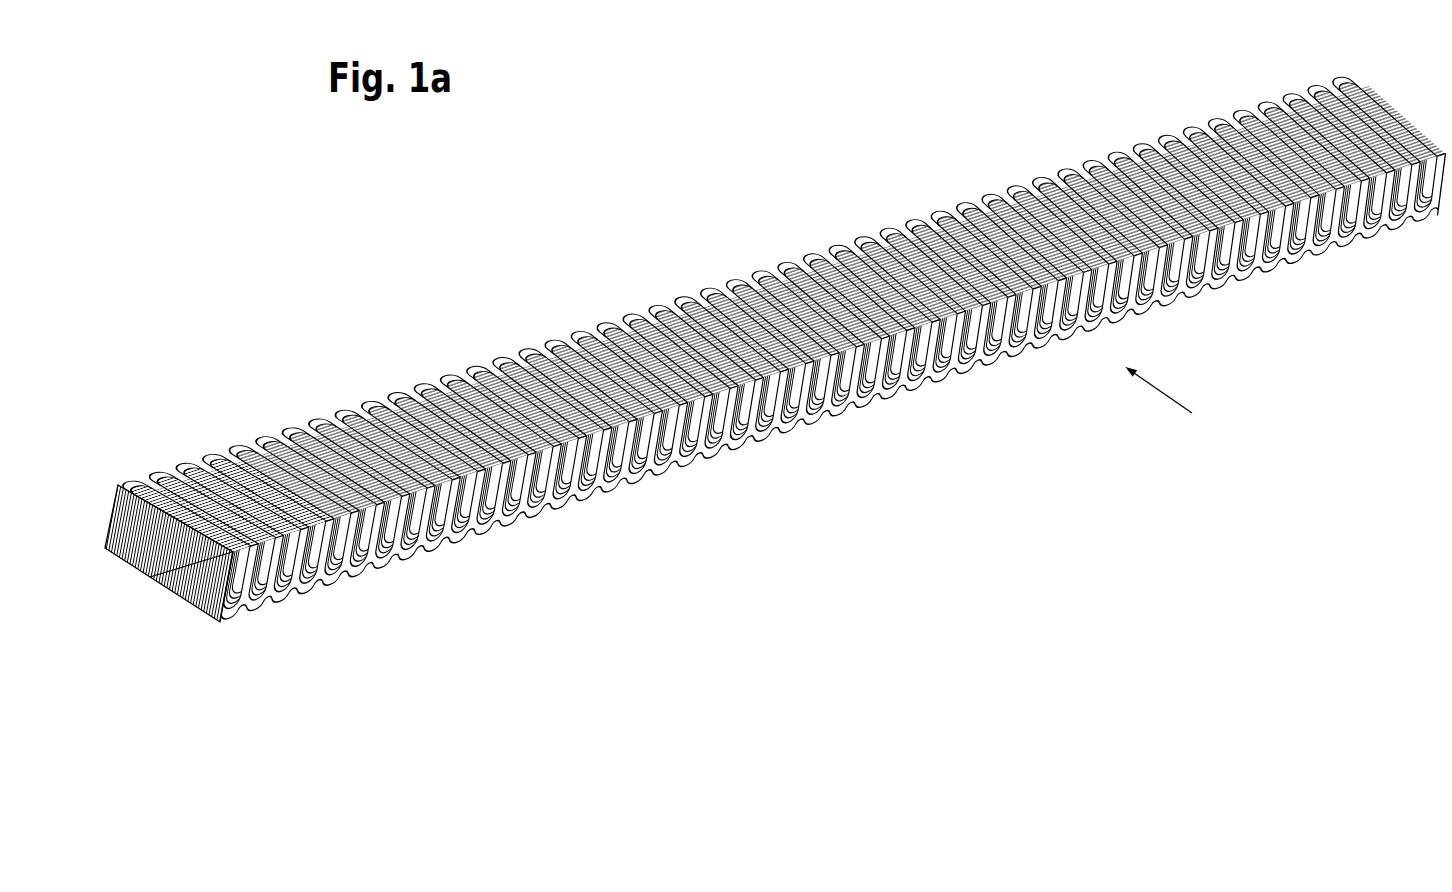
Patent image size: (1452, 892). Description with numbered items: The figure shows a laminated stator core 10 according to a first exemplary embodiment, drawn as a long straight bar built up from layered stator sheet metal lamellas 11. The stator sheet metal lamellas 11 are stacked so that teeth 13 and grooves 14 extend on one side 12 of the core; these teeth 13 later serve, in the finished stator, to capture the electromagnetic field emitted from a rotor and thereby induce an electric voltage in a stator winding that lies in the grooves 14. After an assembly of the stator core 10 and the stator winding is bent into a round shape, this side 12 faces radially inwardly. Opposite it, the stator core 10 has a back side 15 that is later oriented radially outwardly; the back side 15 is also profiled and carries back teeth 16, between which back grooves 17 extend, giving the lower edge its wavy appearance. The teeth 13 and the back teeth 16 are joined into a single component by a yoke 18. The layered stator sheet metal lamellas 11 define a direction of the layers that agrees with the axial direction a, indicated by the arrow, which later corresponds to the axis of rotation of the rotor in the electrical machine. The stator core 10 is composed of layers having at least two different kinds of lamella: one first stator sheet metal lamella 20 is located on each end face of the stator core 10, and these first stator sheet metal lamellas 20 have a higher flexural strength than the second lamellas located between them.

The stator core 10 is at (672, 273).
The stator sheet metal lamellas 11 is at (162, 566).
The side 12 is at (822, 224).
The teeth 13 is at (963, 207).
The grooves 14 is at (1044, 180).
The back side 15 is at (722, 477).
The back teeth 16 is at (877, 407).
The back grooves 17 is at (863, 413).
The yoke 18 is at (543, 508).
The first stator sheet metal lamella 20 is at (400, 398).
The axial direction a is at (1167, 393).